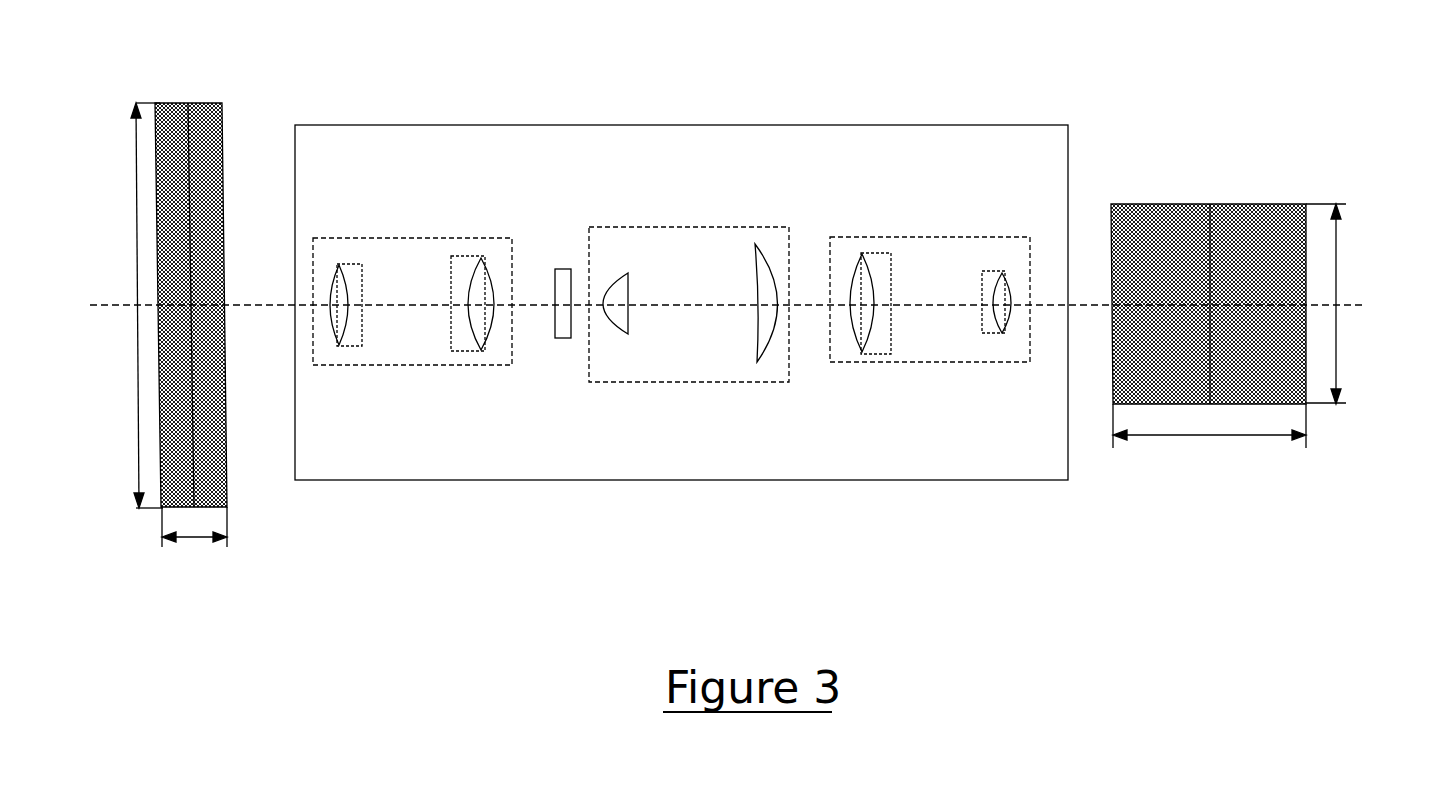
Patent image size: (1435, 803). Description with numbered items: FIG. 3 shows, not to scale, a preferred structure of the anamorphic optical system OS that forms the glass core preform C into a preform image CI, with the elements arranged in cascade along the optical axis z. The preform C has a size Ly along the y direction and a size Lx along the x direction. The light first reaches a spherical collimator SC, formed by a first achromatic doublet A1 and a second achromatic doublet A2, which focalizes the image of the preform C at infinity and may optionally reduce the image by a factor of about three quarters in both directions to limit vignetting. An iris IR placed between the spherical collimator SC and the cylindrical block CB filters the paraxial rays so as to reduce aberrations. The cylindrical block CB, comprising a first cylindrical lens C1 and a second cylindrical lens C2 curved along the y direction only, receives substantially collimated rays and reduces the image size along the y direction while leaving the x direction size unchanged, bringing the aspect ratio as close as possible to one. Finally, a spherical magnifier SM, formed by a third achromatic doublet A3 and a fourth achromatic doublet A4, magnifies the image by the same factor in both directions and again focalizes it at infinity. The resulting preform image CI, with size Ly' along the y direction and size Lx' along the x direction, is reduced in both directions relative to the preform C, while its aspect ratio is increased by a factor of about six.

The glass core preform C is at (222, 78).
The optical axis z is at (117, 305).
The preform size along the y direction Ly is at (127, 305).
The preform size along the x direction Lx is at (194, 567).
The anamorphic optical system OS is at (930, 127).
The spherical collimator SC is at (402, 238).
The first achromatic doublet A1 is at (345, 346).
The second achromatic doublet A2 is at (462, 352).
The iris IR is at (560, 338).
The cylindrical block CB is at (672, 228).
The first cylindrical lens C1 is at (622, 334).
The second cylindrical lens C2 is at (753, 362).
The spherical magnifier SM is at (908, 236).
The third achromatic doublet A3 is at (868, 354).
The fourth achromatic doublet A4 is at (990, 333).
The preform image CI is at (1348, 128).
The preform image size along the y direction Ly' is at (1351, 304).
The preform image size along the x direction Lx' is at (1209, 459).